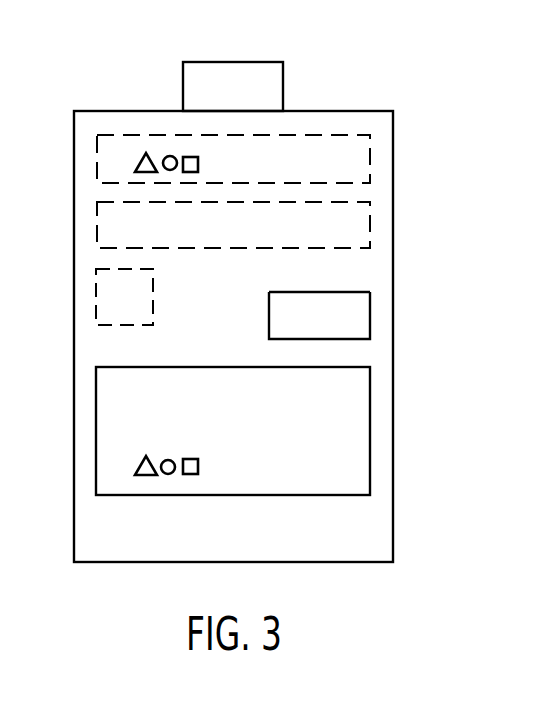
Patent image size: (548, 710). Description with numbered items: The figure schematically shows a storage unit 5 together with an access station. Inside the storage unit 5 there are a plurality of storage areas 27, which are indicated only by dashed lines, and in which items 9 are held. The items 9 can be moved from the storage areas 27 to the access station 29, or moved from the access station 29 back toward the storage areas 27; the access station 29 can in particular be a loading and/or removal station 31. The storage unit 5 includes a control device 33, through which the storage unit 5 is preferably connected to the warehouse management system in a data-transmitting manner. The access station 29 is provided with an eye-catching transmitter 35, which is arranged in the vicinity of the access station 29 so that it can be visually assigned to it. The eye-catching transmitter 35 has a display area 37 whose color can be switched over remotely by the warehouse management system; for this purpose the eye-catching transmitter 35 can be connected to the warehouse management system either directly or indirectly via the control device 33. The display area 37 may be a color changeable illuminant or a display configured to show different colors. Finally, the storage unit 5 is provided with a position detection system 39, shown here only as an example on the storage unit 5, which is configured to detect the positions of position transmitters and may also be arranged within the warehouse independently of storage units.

The storage unit 5 is at (105, 72).
The items 9 is at (124, 159).
The storage areas 27 is at (348, 133).
The access station 29 is at (287, 431).
The loading and/or removal station 31 is at (355, 458).
The control device 33 is at (139, 315).
The eye-catching transmitter 35 is at (372, 322).
The display area 37 is at (362, 302).
The position detection system 39 is at (202, 68).